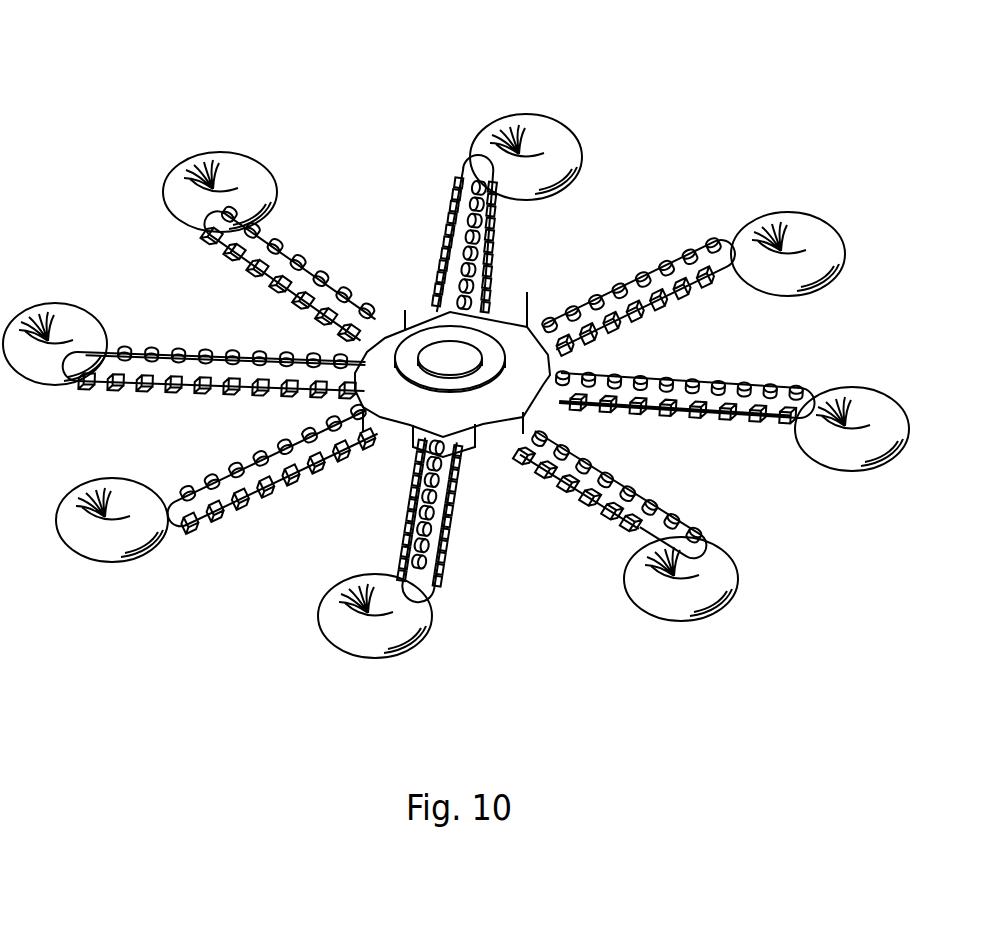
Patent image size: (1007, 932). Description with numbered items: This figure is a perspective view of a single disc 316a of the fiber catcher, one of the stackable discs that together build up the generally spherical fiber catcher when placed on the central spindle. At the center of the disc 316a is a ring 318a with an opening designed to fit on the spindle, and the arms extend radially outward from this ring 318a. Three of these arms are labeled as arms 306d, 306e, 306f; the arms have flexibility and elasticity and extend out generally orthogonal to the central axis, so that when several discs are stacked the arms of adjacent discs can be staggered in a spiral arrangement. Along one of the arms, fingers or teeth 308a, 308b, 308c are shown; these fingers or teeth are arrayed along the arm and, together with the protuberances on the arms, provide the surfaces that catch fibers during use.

The disc 316a is at (139, 57).
The ring 318a is at (403, 320).
The arm 306d is at (738, 228).
The arm 306e is at (803, 392).
The arm 306f is at (695, 533).
The finger or tooth 308a is at (657, 541).
The finger or tooth 308b is at (648, 535).
The finger or tooth 308c is at (632, 527).